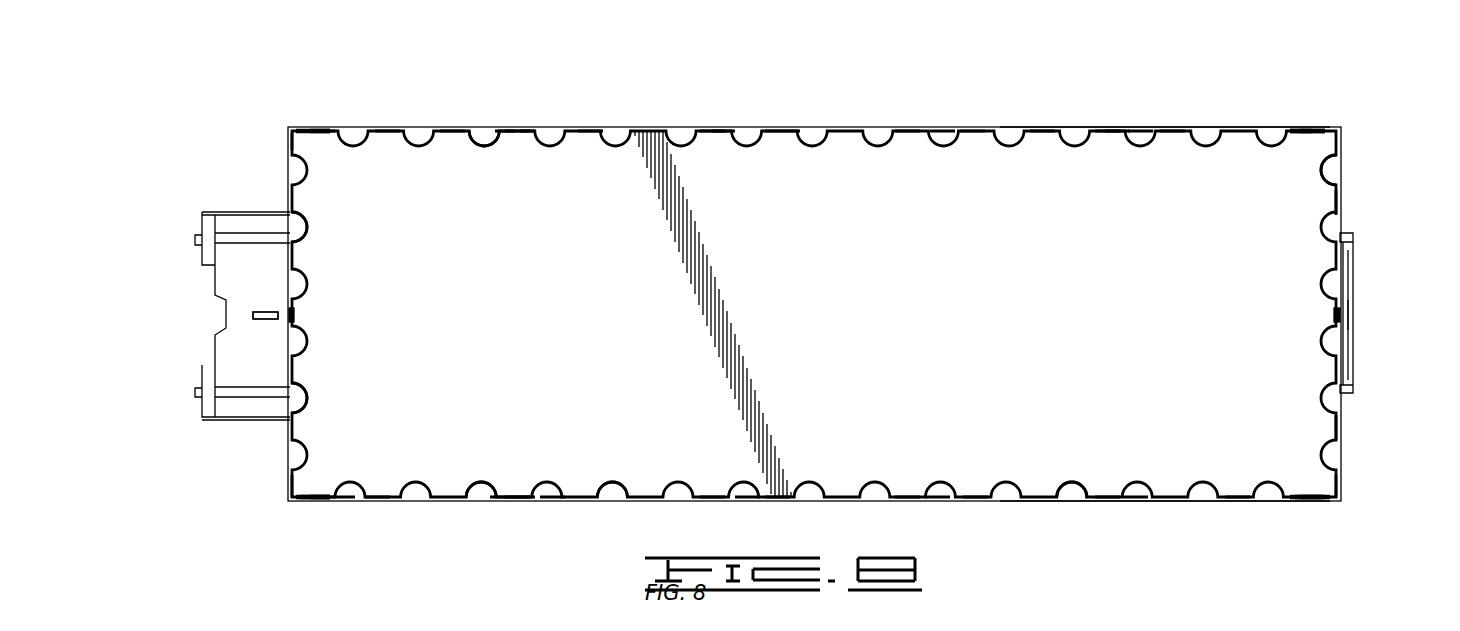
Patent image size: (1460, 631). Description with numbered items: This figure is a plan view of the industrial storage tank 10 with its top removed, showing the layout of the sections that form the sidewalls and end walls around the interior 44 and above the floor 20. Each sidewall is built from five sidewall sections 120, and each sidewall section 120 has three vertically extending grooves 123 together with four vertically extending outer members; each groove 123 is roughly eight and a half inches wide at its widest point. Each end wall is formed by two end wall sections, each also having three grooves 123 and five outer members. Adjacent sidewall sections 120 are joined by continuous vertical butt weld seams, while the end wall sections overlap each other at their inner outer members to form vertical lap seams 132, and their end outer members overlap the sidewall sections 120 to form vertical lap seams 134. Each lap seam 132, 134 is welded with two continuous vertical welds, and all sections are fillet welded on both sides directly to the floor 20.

The industrial storage tank 10 is at (1358, 78).
The floor 20 is at (1143, 325).
The interior 44 is at (797, 330).
The sidewall section 120 is at (972, 131).
The groove 123 is at (493, 135).
The vertical lap seam 132 is at (290, 318).
The vertical lap seam 134 is at (322, 131).